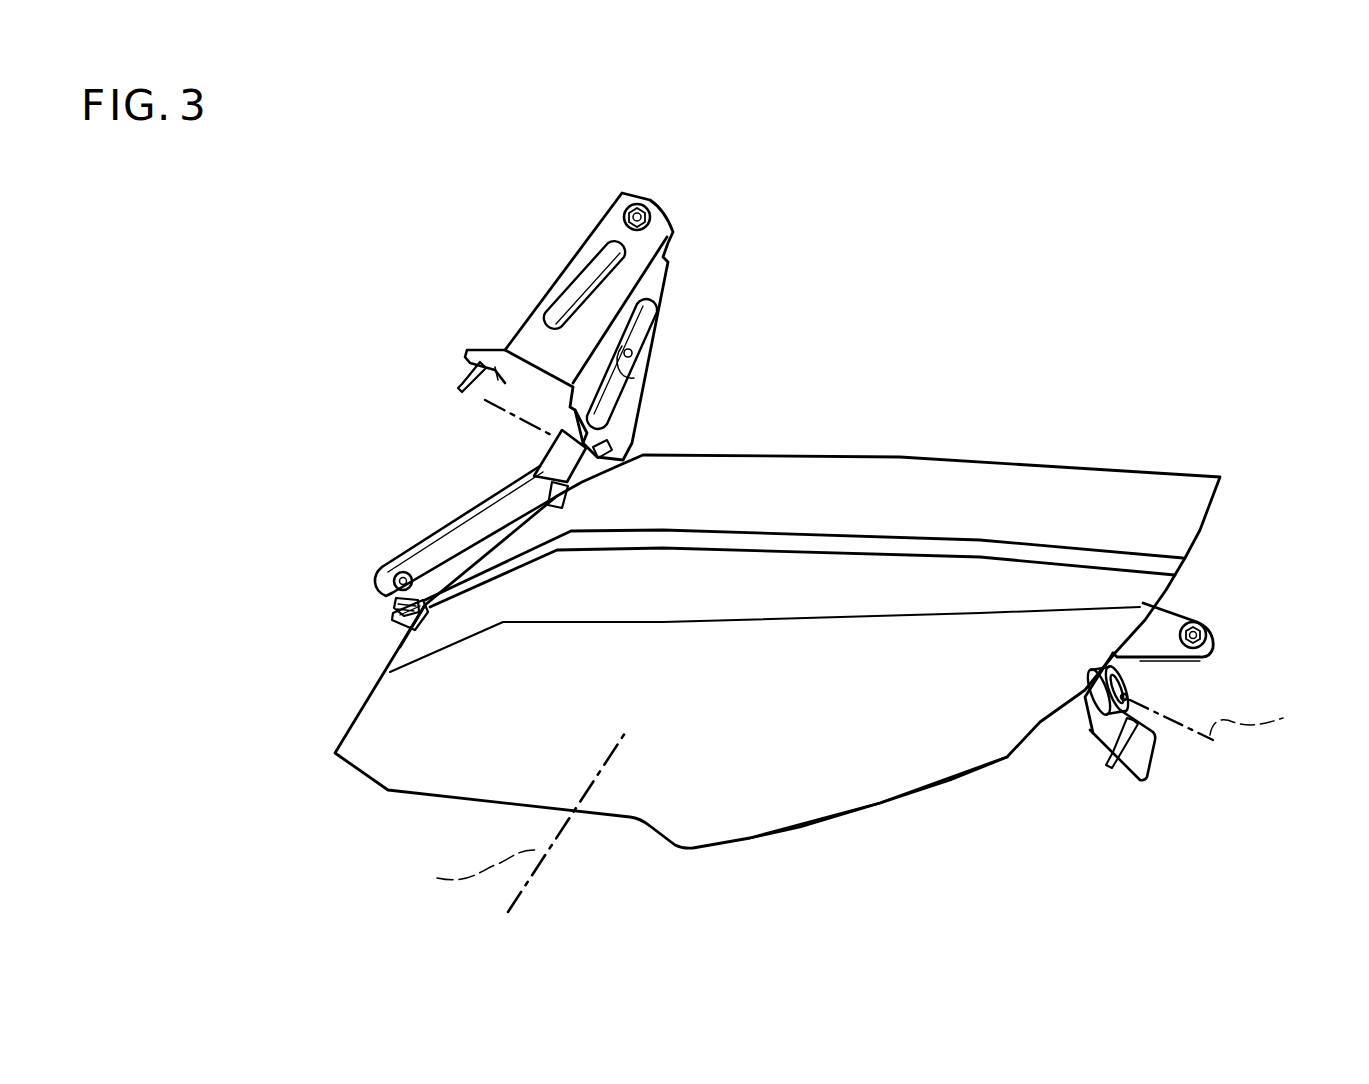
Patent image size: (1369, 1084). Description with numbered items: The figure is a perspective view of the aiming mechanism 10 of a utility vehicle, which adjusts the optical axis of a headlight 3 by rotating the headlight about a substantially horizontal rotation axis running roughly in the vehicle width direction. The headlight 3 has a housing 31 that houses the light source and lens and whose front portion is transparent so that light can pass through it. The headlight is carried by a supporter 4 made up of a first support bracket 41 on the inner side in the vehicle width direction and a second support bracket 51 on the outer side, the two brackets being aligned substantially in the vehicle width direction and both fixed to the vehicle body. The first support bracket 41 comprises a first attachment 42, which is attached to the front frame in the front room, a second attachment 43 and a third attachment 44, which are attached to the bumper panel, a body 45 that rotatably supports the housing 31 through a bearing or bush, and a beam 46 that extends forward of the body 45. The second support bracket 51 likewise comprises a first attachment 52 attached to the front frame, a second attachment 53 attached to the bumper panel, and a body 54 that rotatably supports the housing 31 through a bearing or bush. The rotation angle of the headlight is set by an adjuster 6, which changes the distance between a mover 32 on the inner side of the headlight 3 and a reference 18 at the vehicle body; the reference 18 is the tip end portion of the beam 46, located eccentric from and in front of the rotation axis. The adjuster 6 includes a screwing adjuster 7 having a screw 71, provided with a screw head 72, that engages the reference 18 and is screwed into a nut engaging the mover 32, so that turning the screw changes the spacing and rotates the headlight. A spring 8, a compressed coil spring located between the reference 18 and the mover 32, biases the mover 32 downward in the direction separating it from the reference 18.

The aiming mechanism 10 is at (1097, 197).
The headlight 3 is at (1023, 455).
The housing 31 is at (855, 797).
The mover 32 is at (393, 622).
The supporter 4 is at (545, 207).
The first support bracket 41 is at (530, 300).
The first attachment 42 is at (608, 230).
The second attachment 43 is at (467, 347).
The third attachment 44 is at (633, 440).
The body 45 is at (653, 293).
The beam 46 is at (487, 495).
The adjuster 6 is at (388, 525).
The screwing adjuster 7 is at (353, 574).
The screw 71 is at (393, 608).
The screw head 72 is at (387, 572).
The spring 8 is at (397, 620).
The reference 18 is at (427, 583).
The second support bracket 51 is at (1213, 643).
The first attachment 52 is at (1168, 617).
The second attachment 53 is at (1150, 770).
The body 54 is at (1090, 730).